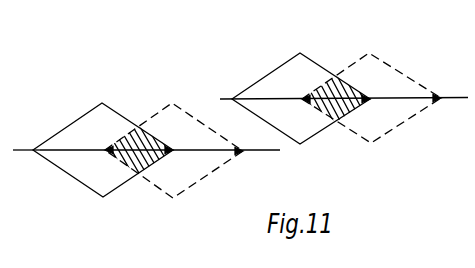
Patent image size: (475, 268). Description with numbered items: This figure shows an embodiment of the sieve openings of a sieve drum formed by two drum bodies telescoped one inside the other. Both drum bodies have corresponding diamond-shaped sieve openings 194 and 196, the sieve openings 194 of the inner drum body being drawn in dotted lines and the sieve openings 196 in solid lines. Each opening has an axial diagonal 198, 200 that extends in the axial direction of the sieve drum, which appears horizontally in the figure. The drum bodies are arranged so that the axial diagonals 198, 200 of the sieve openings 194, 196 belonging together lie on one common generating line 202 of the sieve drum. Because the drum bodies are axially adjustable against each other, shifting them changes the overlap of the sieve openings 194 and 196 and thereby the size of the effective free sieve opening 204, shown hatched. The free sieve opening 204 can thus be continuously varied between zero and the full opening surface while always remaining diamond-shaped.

The sieve openings 194 is at (162, 112).
The sieve openings 196 is at (65, 127).
The axial diagonal 198 is at (208, 151).
The axial diagonal 200 is at (71, 149).
The generating line 202 is at (21, 148).
The free sieve opening 204 is at (139, 173).